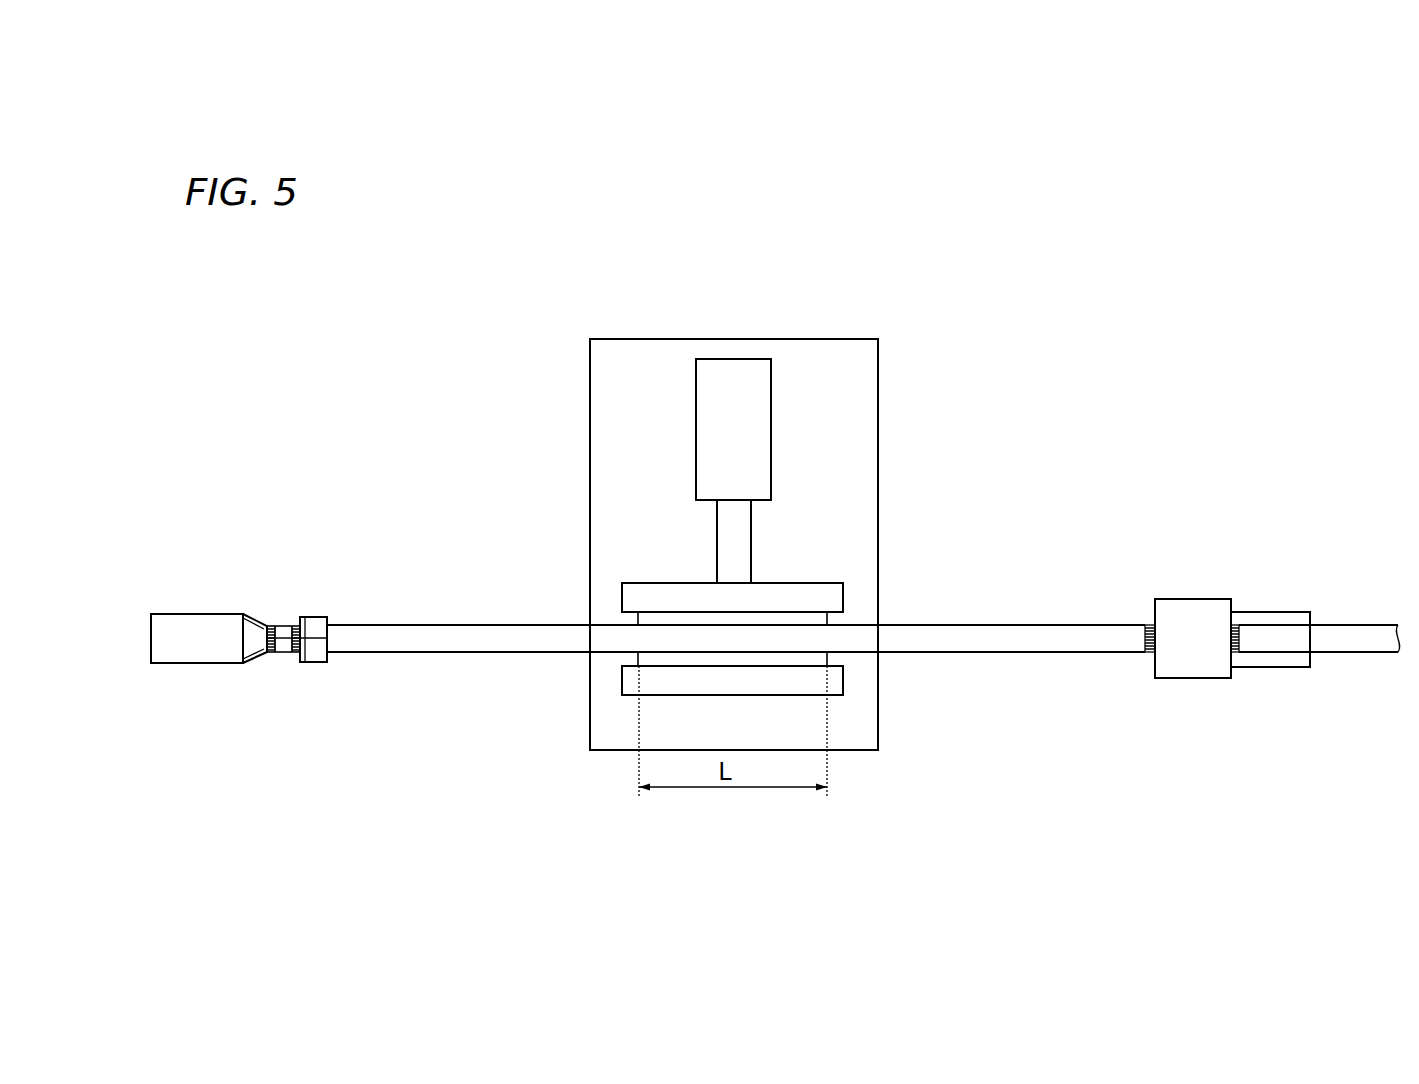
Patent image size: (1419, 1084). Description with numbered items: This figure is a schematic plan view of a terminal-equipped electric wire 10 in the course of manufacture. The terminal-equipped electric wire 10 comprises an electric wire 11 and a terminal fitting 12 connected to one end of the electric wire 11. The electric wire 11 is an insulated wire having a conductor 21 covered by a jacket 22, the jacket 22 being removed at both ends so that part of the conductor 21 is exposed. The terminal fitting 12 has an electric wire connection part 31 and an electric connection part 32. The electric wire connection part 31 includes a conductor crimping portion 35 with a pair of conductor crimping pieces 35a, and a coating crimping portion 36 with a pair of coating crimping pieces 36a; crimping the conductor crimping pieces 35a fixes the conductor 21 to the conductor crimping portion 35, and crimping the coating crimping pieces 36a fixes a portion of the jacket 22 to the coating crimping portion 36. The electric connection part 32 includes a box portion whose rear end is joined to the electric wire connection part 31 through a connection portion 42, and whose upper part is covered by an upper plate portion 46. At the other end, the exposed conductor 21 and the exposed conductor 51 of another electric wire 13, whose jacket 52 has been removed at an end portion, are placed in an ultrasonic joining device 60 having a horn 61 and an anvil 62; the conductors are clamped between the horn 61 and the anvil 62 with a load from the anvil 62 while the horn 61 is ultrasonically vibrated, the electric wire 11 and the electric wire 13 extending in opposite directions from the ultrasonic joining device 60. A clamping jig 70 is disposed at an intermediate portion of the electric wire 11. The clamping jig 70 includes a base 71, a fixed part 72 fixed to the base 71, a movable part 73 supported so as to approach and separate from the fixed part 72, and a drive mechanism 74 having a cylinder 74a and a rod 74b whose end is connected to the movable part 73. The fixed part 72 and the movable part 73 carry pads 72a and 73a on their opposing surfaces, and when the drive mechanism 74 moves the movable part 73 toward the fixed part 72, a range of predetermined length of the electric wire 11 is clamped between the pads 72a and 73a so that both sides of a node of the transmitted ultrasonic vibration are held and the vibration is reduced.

The terminal-equipped electric wire 10 is at (440, 604).
The electric wire 11 is at (462, 660).
The terminal fitting 12 is at (208, 606).
The electric wire 13 is at (1362, 661).
The conductor 21 is at (1147, 658).
The jacket 22 is at (1016, 633).
The electric wire connection part 31 is at (302, 664).
The electric connection part 32 is at (172, 665).
The conductor crimping portion 35 is at (282, 664).
The conductor crimping pieces 35a is at (288, 620).
The coating crimping portion 36 is at (318, 664).
The coating crimping pieces 36a is at (343, 626).
The connection portion 42 is at (255, 664).
The upper plate portion 46 is at (154, 636).
The conductor 51 is at (1236, 668).
The jacket 52 is at (1325, 630).
The ultrasonic joining device 60 is at (1191, 695).
The horn 61 is at (1262, 668).
The anvil 62 is at (1190, 610).
The clamping jig 70 is at (921, 541).
The base 71 is at (875, 720).
The fixed part 72 is at (633, 696).
The pad 72a is at (634, 660).
The movable part 73 is at (634, 583).
The pad 73a is at (637, 620).
The drive mechanism 74 is at (782, 412).
The cylinder 74a is at (746, 365).
The rod 74b is at (740, 537).